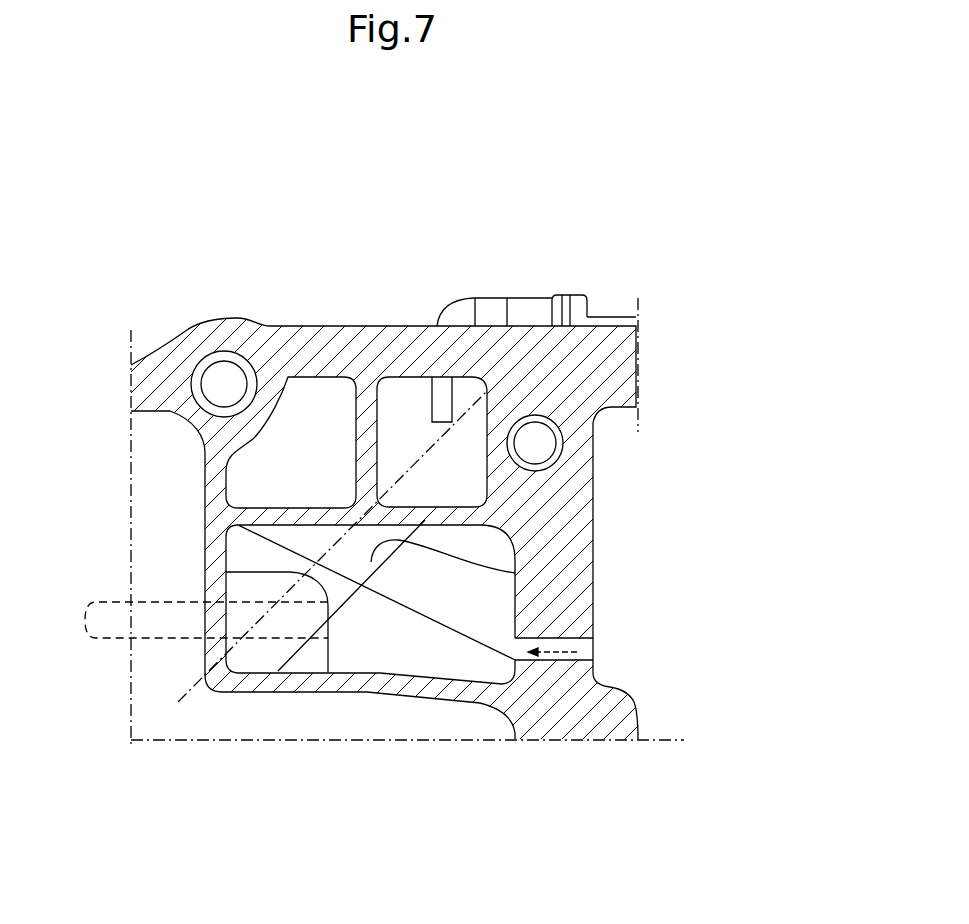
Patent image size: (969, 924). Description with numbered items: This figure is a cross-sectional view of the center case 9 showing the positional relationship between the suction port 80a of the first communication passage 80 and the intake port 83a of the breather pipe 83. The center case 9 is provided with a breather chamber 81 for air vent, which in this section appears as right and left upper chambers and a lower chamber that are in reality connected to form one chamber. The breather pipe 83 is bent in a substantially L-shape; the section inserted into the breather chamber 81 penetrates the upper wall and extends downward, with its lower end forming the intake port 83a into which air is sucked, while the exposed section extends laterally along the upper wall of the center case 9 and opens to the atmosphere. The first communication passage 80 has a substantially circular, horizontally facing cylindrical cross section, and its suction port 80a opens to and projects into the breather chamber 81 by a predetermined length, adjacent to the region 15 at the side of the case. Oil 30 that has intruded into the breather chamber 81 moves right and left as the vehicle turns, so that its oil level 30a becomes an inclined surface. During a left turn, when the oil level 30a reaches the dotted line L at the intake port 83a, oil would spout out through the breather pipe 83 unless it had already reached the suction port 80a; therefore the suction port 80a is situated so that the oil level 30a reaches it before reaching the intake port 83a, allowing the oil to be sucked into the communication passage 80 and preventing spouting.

The center case 9 is at (293, 325).
The cylinder block 15 is at (158, 474).
The oil 30 is at (432, 657).
The oil level 30a is at (515, 573).
The first communication passage 80 is at (107, 595).
The suction port 80a is at (328, 626).
The breather chamber 81 is at (336, 528).
The breather pipe 83 is at (522, 298).
The intake port 83a is at (430, 423).
The dotted line L is at (577, 297).